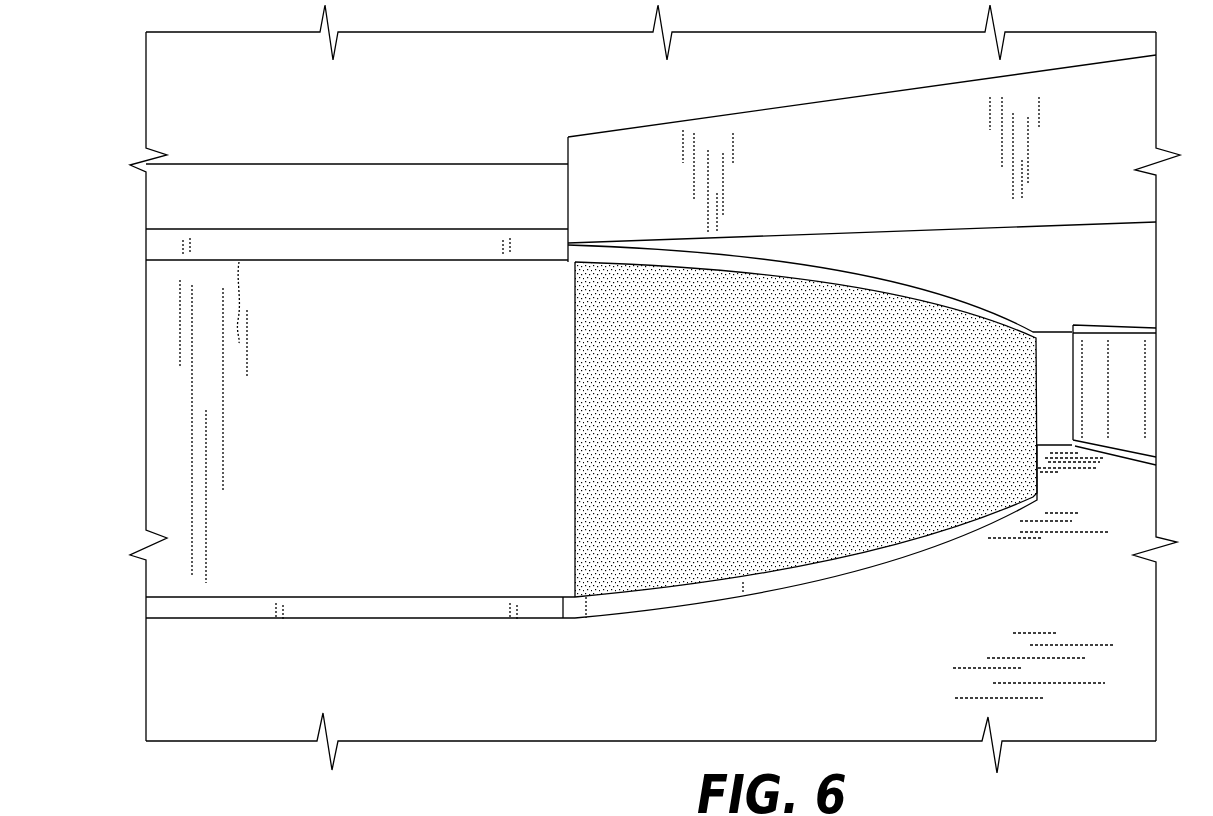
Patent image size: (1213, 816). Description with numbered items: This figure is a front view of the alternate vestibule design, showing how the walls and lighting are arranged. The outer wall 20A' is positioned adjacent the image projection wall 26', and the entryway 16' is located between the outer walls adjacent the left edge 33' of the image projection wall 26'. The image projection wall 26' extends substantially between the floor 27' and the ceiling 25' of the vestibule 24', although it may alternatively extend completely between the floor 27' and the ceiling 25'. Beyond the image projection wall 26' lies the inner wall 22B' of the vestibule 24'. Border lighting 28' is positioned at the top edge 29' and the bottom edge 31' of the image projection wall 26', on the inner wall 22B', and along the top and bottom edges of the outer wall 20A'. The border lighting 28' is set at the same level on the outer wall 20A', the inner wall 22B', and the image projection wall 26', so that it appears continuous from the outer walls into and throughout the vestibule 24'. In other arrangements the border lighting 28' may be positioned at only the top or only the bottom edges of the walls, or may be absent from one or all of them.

The entryway 16' is at (651, 158).
The outer wall 20A' is at (236, 422).
The inner wall 22B' is at (1118, 390).
The vestibule 24' is at (1034, 660).
The ceiling 25' is at (862, 253).
The image projection wall 26' is at (806, 429).
The floor 27' is at (975, 553).
The border lighting 28' is at (678, 378).
The top edge 29' is at (820, 287).
The bottom edge 31' is at (823, 531).
The left edge 33' is at (534, 429).